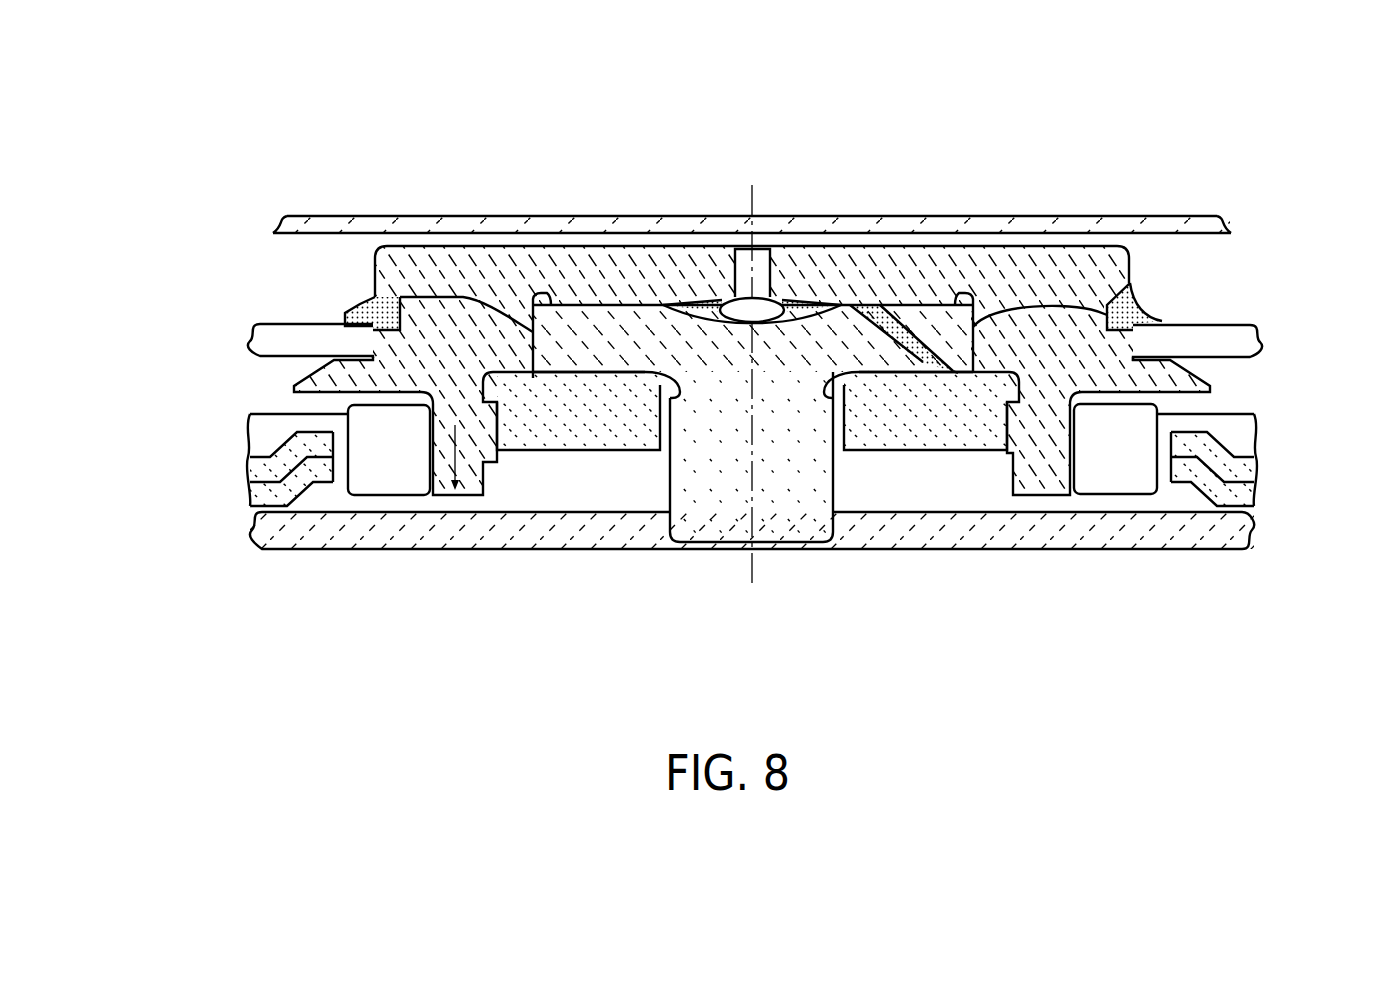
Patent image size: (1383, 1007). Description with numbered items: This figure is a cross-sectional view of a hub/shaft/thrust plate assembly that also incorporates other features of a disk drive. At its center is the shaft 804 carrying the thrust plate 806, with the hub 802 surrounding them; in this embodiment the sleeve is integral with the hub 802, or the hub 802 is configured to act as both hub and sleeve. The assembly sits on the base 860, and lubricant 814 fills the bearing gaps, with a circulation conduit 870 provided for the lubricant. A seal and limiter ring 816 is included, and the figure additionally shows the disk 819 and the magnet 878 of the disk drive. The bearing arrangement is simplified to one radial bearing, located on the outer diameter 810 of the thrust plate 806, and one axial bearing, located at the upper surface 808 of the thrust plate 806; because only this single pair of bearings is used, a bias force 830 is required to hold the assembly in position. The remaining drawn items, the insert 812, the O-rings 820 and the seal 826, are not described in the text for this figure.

The hub 802 is at (1073, 277).
The shaft 804 is at (772, 493).
The thrust plate 806 is at (814, 355).
The upper surface 808 is at (900, 303).
The outer diameter 810 is at (373, 295).
The insert 812 is at (592, 352).
The lubricant 814 is at (935, 372).
The seal and limiter ring 816 is at (537, 433).
The disk 819 is at (271, 344).
The O-ring 820 is at (722, 303).
The seal 826 is at (1150, 318).
The bias force 830 is at (442, 483).
The base 860 is at (455, 537).
The circulation conduit 870 is at (948, 368).
The magnet 878 is at (381, 482).